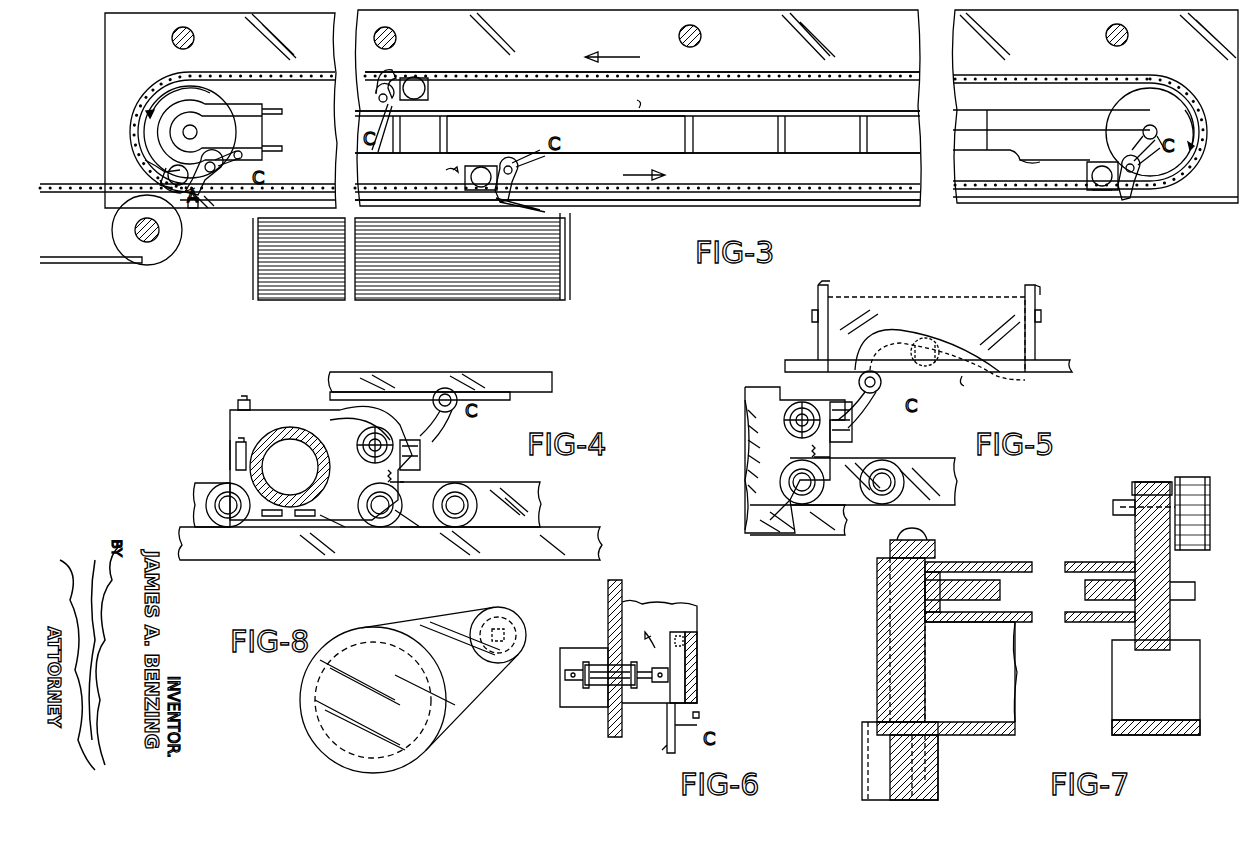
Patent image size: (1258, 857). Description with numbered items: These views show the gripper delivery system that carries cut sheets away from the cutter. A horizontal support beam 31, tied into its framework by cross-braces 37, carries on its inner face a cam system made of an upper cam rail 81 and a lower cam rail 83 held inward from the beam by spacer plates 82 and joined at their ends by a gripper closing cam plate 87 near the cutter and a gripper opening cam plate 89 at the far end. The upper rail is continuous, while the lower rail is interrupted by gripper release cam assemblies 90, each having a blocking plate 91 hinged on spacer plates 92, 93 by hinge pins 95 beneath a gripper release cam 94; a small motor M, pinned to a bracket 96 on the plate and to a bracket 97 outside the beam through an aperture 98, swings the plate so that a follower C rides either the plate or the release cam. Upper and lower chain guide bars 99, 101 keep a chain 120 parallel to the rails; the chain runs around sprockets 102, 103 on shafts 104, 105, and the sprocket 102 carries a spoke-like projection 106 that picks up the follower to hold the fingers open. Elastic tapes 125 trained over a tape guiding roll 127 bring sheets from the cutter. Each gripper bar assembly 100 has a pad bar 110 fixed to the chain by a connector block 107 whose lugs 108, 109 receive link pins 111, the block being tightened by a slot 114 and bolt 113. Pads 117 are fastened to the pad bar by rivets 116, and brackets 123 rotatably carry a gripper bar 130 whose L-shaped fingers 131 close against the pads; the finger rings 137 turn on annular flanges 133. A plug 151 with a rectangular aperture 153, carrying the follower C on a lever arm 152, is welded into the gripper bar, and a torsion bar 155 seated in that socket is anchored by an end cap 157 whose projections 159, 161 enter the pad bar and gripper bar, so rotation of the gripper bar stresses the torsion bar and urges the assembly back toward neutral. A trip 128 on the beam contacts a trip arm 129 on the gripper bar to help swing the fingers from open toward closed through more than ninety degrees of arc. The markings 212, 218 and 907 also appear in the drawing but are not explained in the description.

In FIG. 3, the support beam 31 is at (852, 62).
In FIG. 3, the cross-brace 37 is at (196, 40).
In FIG. 3, the upper cam rail 81 is at (762, 105).
In FIG. 3, the spacer plates 82 is at (871, 132).
In FIG. 3, the lower cam rail 83 is at (768, 160).
In FIG. 4, the lower cam rail 83 is at (548, 374).
In FIG. 5, the lower cam rail 83 is at (1060, 358).
In FIG. 6, the lower cam rail 83 is at (700, 703).
In FIG. 3, the gripper closing cam plate 87 is at (220, 132).
In FIG. 3, the gripper opening cam plate 89 is at (1055, 132).
In FIG. 5, the gripper release cam assembly 90 is at (1000, 280).
In FIG. 6, the gripper release cam assembly 90 is at (670, 585).
In FIG. 5, the blocking plate 91 is at (974, 392).
In FIG. 6, the blocking plate 91 is at (683, 650).
In FIG. 5, the spacer plate 92 is at (1040, 292).
In FIG. 6, the spacer plate 92 is at (684, 584).
In FIG. 5, the spacer plate 93 is at (832, 282).
In FIG. 3, the gripper release cam 94 is at (610, 143).
In FIG. 5, the gripper release cam 94 is at (927, 347).
In FIG. 6, the gripper release cam 94 is at (690, 668).
In FIG. 5, the hinge pins 95 is at (812, 316).
In FIG. 6, the hinge pins 95 is at (685, 627).
In FIG. 5, the bracket 96 is at (1019, 381).
In FIG. 6, the bracket 96 is at (660, 710).
In FIG. 6, the bracket 97 is at (578, 708).
In FIG. 6, the aperture 98 is at (620, 660).
In FIG. 3, the upper chain guide bar 99 is at (740, 82).
In FIG. 4, the gripper bar assembly 100 is at (288, 399).
In FIG. 5, the gripper bar assembly 100 is at (738, 372).
In FIG. 3, the lower chain guide bar 101 is at (665, 200).
In FIG. 4, the lower chain guide bar 101 is at (598, 540).
In FIG. 5, the lower chain guide bar 101 is at (805, 535).
In FIG. 3, the sprocket 102 is at (1192, 78).
In FIG. 3, the sprocket 103 is at (170, 100).
In FIG. 3, the shaft 104 is at (196, 130).
In FIG. 3, the shaft 105 is at (1150, 125).
In FIG. 3, the spoke-like projection 106 is at (1197, 162).
In FIG. 4, the connector block 107 is at (308, 398).
In FIG. 5, the connector block 107 is at (760, 386).
In FIG. 4, the forward lug 108 is at (470, 485).
In FIG. 5, the forward lug 108 is at (819, 482).
In FIG. 4, the rearward lug 109 is at (192, 505).
In FIG. 4, the pad bar 110 is at (282, 485).
In FIG. 5, the pad bar 110 is at (750, 430).
In FIG. 7, the pad bar 110 is at (968, 735).
In FIG. 4, the link pins 111 is at (415, 528).
In FIG. 5, the link pins 111 is at (810, 540).
In FIG. 4, the bolt 113 is at (244, 395).
In FIG. 4, the slot 114 is at (230, 462).
In FIG. 4, the rivets 116 is at (272, 520).
In FIG. 3, the pads 117 is at (1095, 190).
In FIG. 4, the pads 117 is at (330, 540).
In FIG. 3, the chain 120 is at (1000, 75).
In FIG. 4, the chain 120 is at (540, 486).
In FIG. 5, the chain 120 is at (955, 485).
In FIG. 4, the bracket 123 is at (340, 400).
In FIG. 3, the elastic tapes 125 is at (64, 267).
In FIG. 3, the tape guiding roll 127 is at (152, 256).
In FIG. 3, the trip 128 is at (196, 210).
In FIG. 4, the trip arm 129 is at (270, 540).
In FIG. 4, the gripper bar 130 is at (420, 468).
In FIG. 5, the gripper bar 130 is at (835, 452).
In FIG. 7, the gripper bar 130 is at (1080, 612).
In FIG. 4, the gripper finger 131 is at (390, 540).
In FIG. 5, the gripper finger 131 is at (775, 520).
In FIG. 4, the annular flanges 133 is at (228, 530).
In FIG. 4, the ring 137 is at (375, 530).
In FIG. 7, the plug 151 is at (1130, 570).
In FIG. 3, the lever arm 152 is at (1185, 195).
In FIG. 4, the lever arm 152 is at (452, 430).
In FIG. 5, the lever arm 152 is at (875, 424).
In FIG. 7, the lever arm 152 is at (1190, 605).
In FIG. 4, the aperture 153 is at (236, 448).
In FIG. 7, the aperture 153 is at (1115, 625).
In FIG. 8, the aperture 153 is at (448, 720).
In FIG. 4, the torsion bar 155 is at (380, 430).
In FIG. 5, the torsion bar 155 is at (798, 426).
In FIG. 7, the torsion bar 155 is at (985, 580).
In FIG. 7, the end cap 157 is at (875, 668).
In FIG. 7, the projection 159 is at (930, 690).
In FIG. 7, the projection 161 is at (948, 610).
In FIG. 8, the shaft 212 is at (488, 694).
In FIG. 7, the cap 218 is at (935, 570).
In FIG. 3, the direction indicator 907 is at (605, 94).